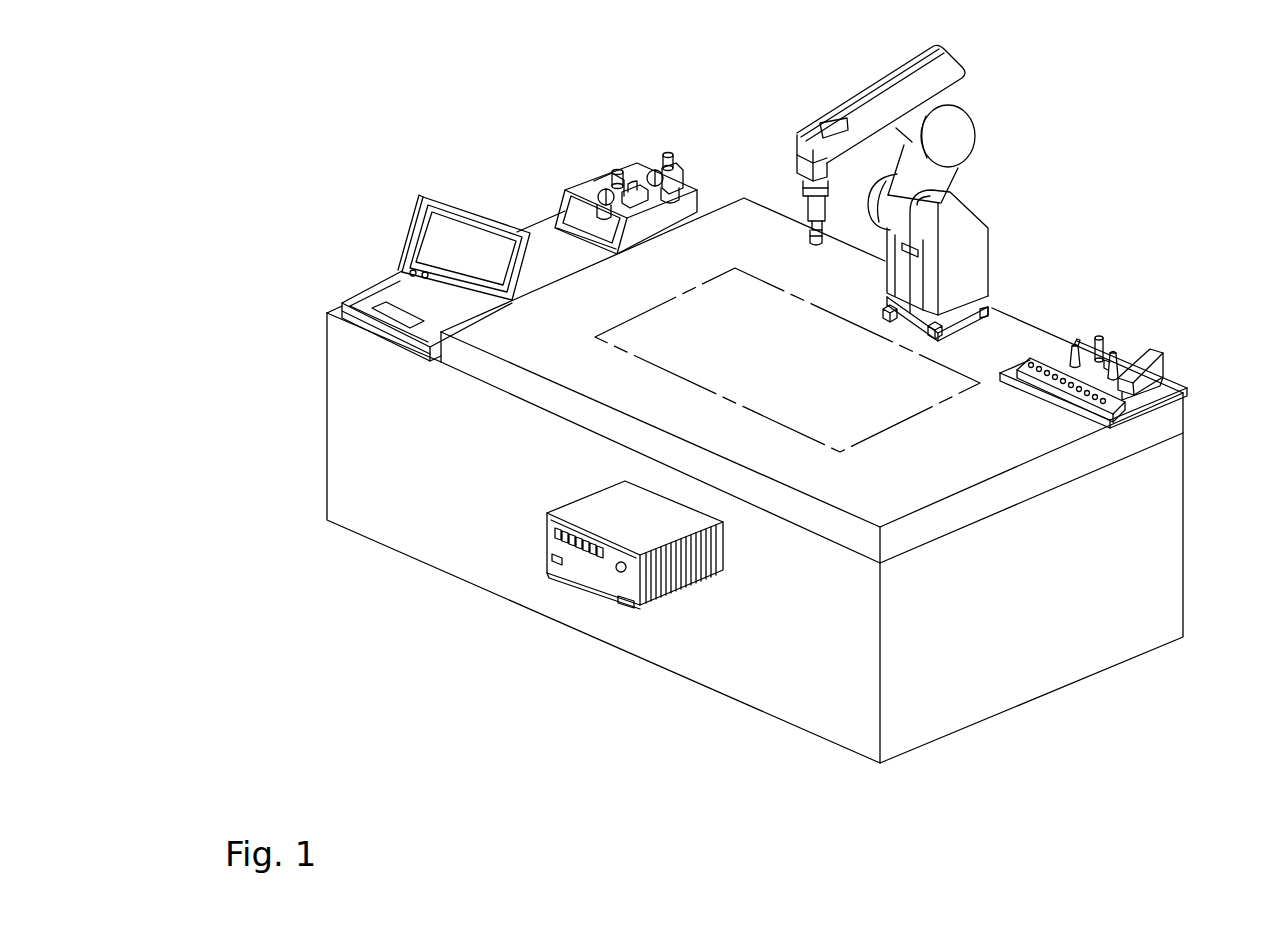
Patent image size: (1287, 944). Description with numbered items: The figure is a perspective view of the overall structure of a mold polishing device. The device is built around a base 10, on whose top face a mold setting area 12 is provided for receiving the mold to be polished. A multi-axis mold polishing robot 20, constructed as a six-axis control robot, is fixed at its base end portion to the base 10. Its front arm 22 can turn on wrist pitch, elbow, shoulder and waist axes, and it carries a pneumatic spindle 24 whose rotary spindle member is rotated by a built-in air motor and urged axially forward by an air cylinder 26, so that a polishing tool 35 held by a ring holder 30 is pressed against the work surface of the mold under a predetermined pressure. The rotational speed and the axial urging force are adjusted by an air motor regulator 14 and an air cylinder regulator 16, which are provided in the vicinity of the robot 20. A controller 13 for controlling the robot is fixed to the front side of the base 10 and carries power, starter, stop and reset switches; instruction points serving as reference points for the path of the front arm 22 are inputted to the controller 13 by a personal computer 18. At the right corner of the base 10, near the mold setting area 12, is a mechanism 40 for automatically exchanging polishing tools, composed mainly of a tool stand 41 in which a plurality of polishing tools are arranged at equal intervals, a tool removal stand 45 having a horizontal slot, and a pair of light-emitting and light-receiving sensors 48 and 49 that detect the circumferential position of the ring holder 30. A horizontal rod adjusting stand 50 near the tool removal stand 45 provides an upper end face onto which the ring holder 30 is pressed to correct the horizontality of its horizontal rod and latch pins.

The base 10 is at (981, 531).
The mold setting area 12 is at (638, 311).
The controller 13 is at (584, 544).
The air motor regulator 14 is at (650, 170).
The air cylinder regulator 16 is at (609, 181).
The personal computer 18 is at (400, 300).
The multi-axis mold polishing robot 20 is at (852, 84).
The front arm 22 is at (799, 150).
The pneumatic spindle 24 is at (808, 210).
The air cylinder 26 is at (805, 187).
The ring holder 30 is at (823, 231).
The polishing tool 35 is at (807, 239).
The mechanism for automatically exchanging polishing tools 40 is at (1110, 351).
The tool stand 41 is at (1045, 383).
The tool removal stand 45 is at (1165, 360).
The light-emitting sensor 48 is at (1073, 346).
The light-receiving sensor 49 is at (1114, 356).
The horizontal rod adjusting stand 50 is at (1097, 338).